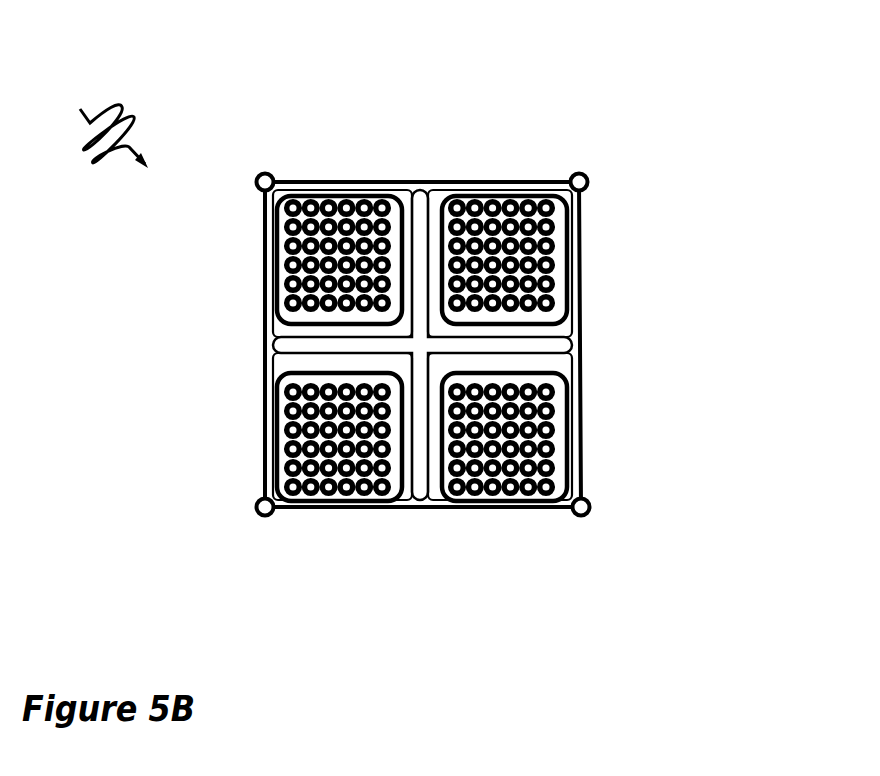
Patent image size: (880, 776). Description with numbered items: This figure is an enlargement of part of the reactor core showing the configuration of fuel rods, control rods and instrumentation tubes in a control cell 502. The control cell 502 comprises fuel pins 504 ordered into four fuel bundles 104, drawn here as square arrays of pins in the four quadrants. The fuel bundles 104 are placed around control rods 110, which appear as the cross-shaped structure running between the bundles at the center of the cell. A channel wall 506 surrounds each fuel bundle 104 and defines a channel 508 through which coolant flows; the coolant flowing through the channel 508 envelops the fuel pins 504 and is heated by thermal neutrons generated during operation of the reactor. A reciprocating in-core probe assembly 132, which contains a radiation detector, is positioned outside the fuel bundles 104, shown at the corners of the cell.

The control cell 502 is at (101, 123).
The fuel pins 504 is at (293, 266).
The control rods 110 is at (266, 351).
The channel wall 506 is at (272, 426).
The channel 508 is at (265, 488).
The reciprocating in-core probe assembly 132 is at (590, 181).
The fuel bundles 104 is at (580, 237).